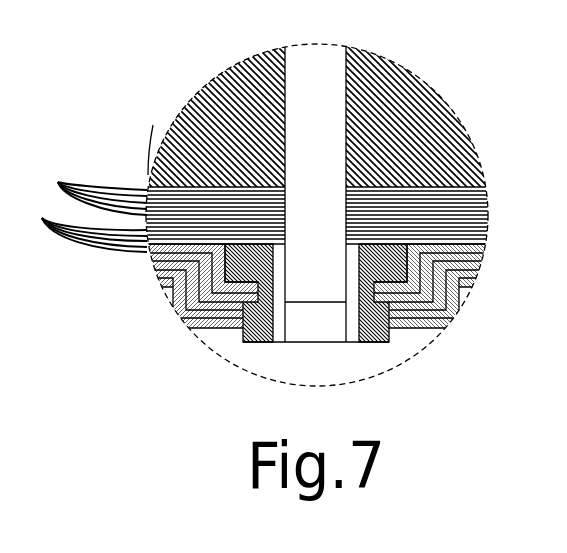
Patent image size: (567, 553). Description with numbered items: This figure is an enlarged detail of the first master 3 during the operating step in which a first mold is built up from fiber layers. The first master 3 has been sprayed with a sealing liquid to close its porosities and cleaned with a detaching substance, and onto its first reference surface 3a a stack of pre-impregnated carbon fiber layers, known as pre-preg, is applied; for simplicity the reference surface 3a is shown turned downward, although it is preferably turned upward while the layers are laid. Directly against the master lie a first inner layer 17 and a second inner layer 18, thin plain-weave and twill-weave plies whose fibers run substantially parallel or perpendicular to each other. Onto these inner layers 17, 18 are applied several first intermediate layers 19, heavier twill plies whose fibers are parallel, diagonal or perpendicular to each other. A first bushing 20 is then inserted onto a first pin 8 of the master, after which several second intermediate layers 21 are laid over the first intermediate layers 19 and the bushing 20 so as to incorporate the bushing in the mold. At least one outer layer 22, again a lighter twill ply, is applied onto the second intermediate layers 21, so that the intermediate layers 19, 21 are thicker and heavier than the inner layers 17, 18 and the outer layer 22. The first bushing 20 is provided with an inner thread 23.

The first master 3 is at (238, 78).
The first reference surface 3a is at (161, 145).
The first pins 8 is at (325, 54).
The first inner layer 17 is at (148, 186).
The second inner layer 18 is at (127, 186).
The first intermediate layers 19 is at (97, 184).
The first bushings 20 is at (263, 343).
The second intermediate layers 21 is at (87, 223).
The outer layer 22 is at (161, 288).
The inner thread 23 is at (351, 332).